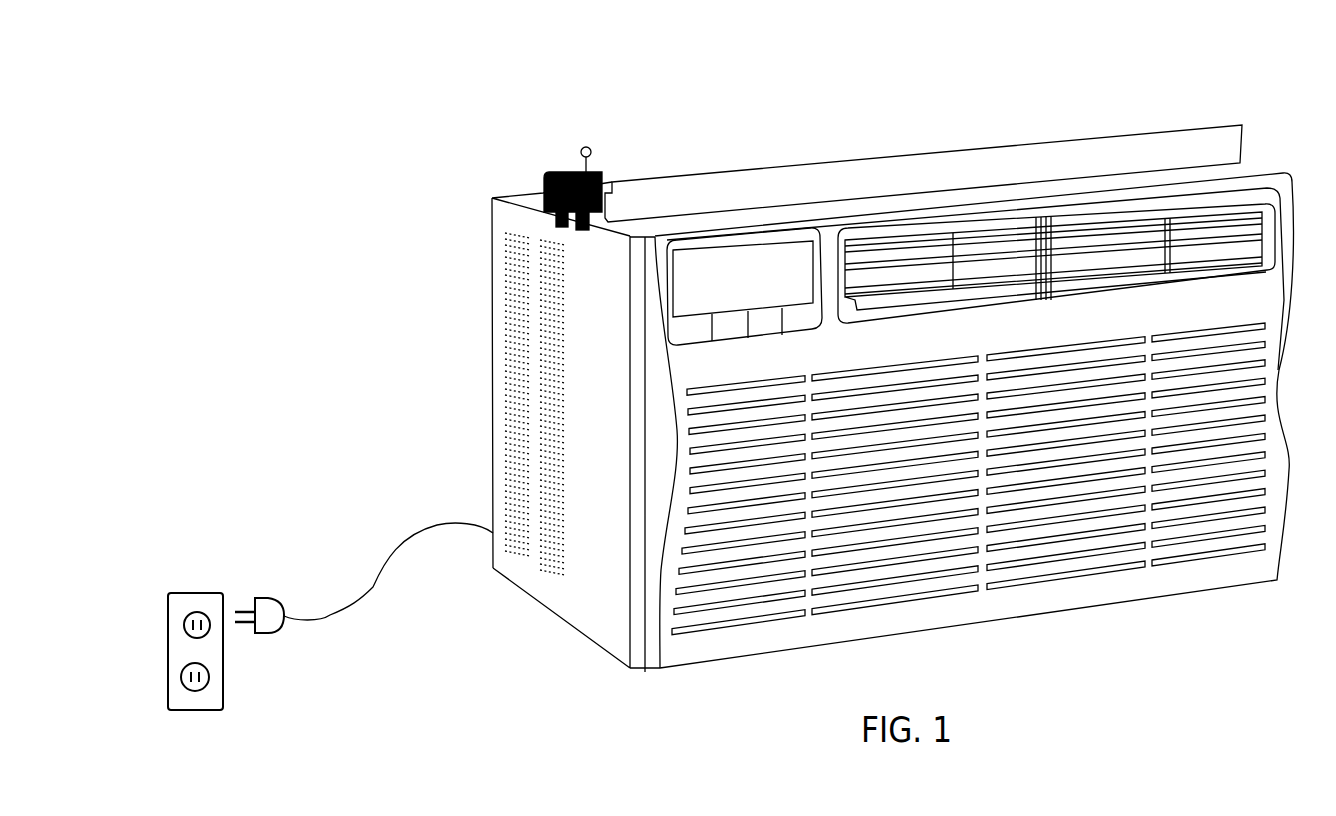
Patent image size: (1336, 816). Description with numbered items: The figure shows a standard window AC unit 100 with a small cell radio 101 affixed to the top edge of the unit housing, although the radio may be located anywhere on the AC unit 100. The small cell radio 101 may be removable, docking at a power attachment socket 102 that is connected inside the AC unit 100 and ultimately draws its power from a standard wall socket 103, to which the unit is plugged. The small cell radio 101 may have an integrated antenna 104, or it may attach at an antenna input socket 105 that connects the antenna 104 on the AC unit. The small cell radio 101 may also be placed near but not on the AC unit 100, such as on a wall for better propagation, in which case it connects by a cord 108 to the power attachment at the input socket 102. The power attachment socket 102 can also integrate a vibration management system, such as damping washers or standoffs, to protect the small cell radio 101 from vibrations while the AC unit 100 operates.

The window AC unit 100 is at (815, 390).
The small cell radio 101 is at (511, 166).
The power attachment socket 102 is at (564, 134).
The standard wall socket 103 is at (146, 590).
The antenna 104 is at (602, 135).
The antenna input socket 105 is at (612, 170).
The cord 108 is at (386, 592).